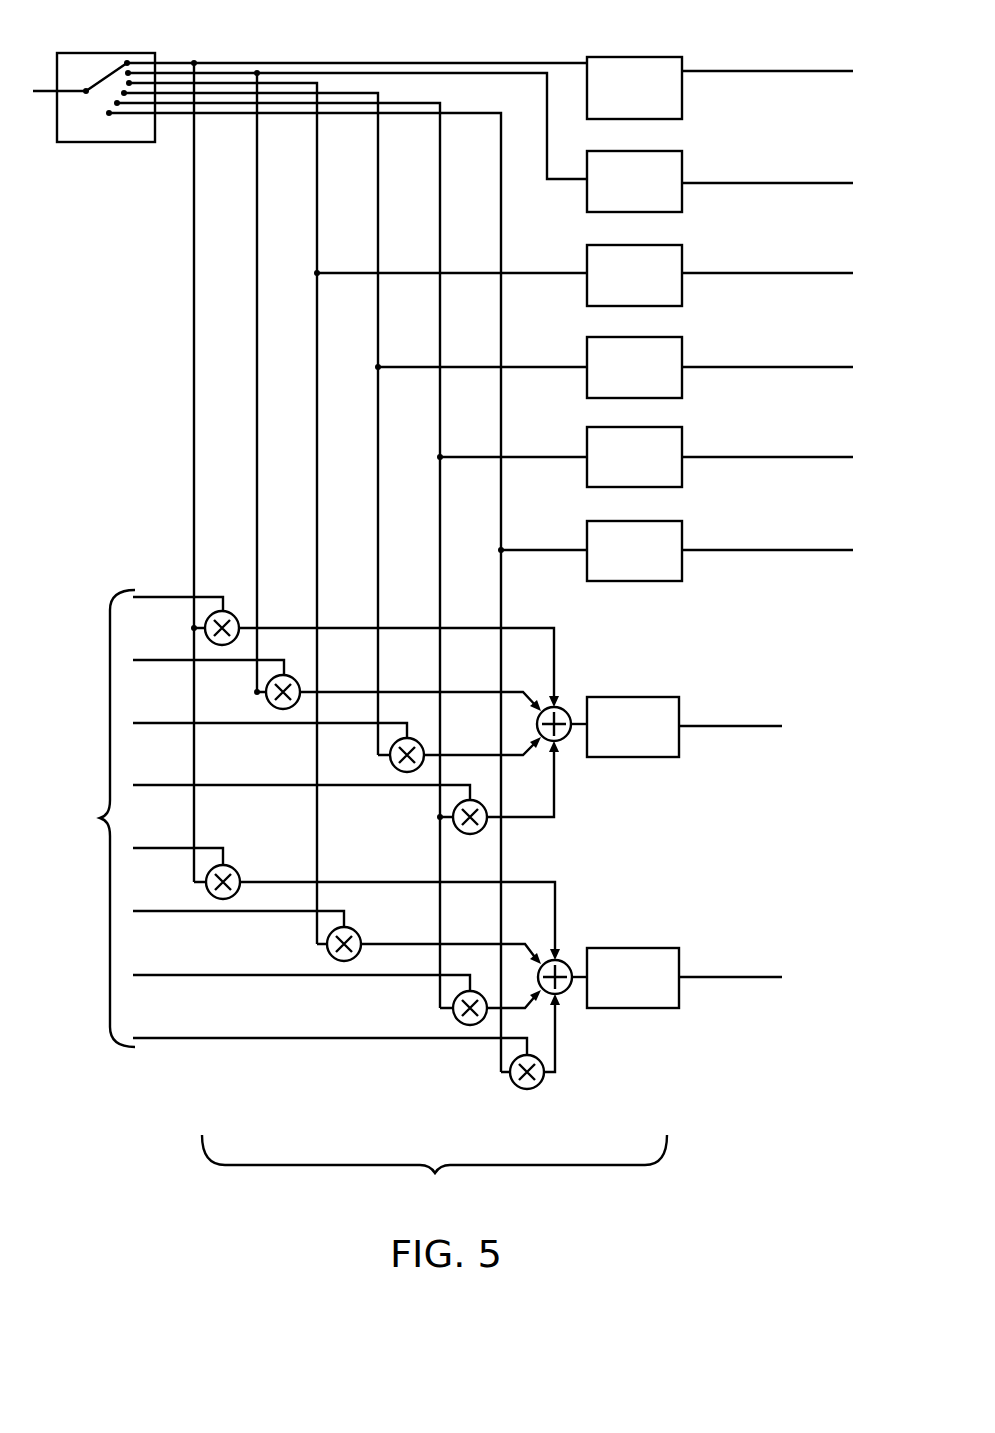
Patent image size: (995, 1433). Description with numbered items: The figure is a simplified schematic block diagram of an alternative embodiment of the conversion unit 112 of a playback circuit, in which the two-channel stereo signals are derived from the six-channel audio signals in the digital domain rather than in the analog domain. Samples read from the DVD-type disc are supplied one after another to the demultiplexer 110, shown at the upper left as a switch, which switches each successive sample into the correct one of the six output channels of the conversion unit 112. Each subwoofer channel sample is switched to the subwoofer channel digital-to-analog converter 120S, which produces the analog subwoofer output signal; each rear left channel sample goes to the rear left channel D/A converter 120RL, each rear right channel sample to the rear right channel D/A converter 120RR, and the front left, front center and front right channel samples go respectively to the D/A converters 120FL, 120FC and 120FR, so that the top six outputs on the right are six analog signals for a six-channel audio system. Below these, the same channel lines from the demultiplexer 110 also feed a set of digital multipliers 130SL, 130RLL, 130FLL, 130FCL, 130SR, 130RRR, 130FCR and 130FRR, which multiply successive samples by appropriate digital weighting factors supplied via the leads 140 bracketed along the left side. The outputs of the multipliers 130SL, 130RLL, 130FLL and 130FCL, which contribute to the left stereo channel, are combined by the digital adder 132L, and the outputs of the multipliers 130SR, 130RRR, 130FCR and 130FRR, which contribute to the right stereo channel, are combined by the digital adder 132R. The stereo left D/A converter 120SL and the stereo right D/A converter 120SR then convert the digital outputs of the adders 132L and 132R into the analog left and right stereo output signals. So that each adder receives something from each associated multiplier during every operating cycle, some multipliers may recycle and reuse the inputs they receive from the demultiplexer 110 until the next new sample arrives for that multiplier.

The demultiplexer 110 is at (86, 53).
The conversion unit 112 is at (434, 1169).
The subwoofer channel digital-to-analog converter 120S is at (645, 57).
The rear left channel D/A converter 120RL is at (645, 151).
The rear right channel D/A converter 120RR is at (645, 245).
The front left channel D/A converter 120FL is at (645, 337).
The front center channel D/A converter 120FC is at (645, 427).
The front right channel D/A converter 120FR is at (645, 521).
The stereo left D/A converter 120SL is at (645, 697).
The stereo right D/A converter 120SR is at (645, 948).
The left stereo channel digital adder 132L is at (566, 711).
The right stereo channel digital adder 132R is at (566, 964).
The digital multiplier 130SL is at (233, 615).
The digital multiplier 130RLL is at (272, 705).
The digital multiplier 130FLL is at (396, 768).
The digital multiplier 130FCL is at (482, 829).
The digital multiplier 130SR is at (234, 869).
The digital multiplier 130RRR is at (331, 955).
The digital multiplier 130FCR is at (460, 1021).
The digital multiplier 130FRR is at (518, 1086).
The leads 140 is at (98, 818).